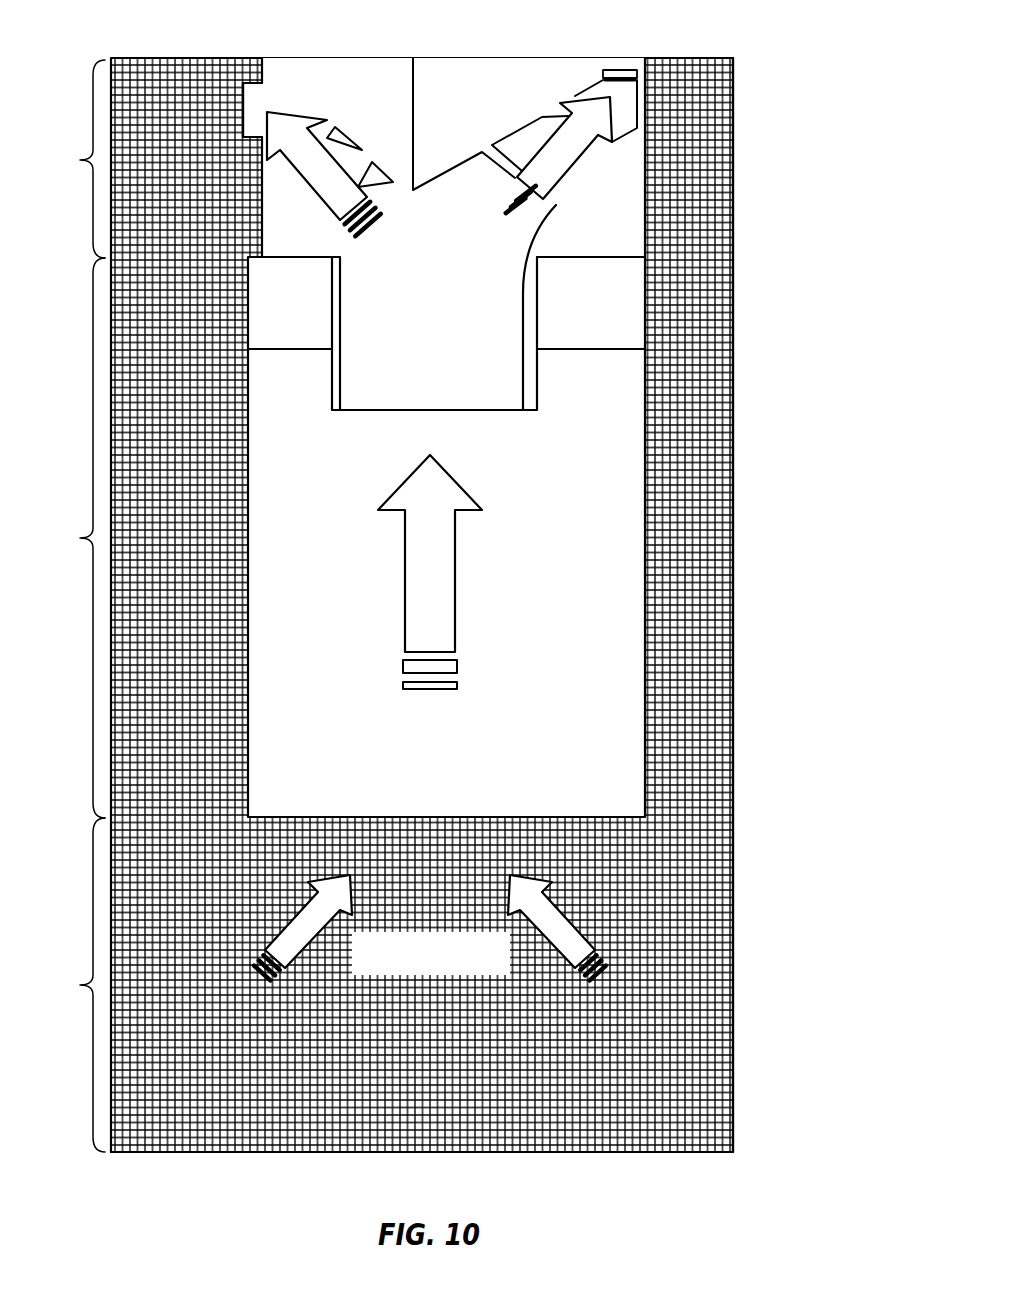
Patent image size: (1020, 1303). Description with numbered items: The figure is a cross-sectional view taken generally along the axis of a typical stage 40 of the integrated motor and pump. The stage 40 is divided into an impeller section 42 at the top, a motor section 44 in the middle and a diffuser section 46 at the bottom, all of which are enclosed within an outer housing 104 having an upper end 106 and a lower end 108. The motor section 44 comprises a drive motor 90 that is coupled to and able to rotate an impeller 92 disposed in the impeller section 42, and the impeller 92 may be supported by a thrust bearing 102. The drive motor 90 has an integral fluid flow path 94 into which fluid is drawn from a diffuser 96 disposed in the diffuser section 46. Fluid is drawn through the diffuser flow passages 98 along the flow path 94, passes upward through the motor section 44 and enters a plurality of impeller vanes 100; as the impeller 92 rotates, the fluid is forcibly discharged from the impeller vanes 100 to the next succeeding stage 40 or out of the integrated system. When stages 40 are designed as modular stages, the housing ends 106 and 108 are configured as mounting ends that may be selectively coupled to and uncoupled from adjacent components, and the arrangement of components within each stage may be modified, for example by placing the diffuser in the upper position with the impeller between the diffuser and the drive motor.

The stage 40 is at (745, 467).
The impeller section 42 is at (73, 159).
The motor section 44 is at (73, 538).
The diffuser section 46 is at (73, 985).
The drive motor 90 is at (647, 628).
The impeller 92 is at (603, 198).
The fluid flow path 94 is at (455, 572).
The diffuser 96 is at (478, 1058).
The diffuser flow passages 98 is at (506, 953).
The impeller vanes 100 is at (282, 85).
The thrust bearing 102 is at (658, 298).
The outer housing 104 is at (737, 852).
The upper end 106 is at (702, 58).
The lower end 108 is at (705, 1158).